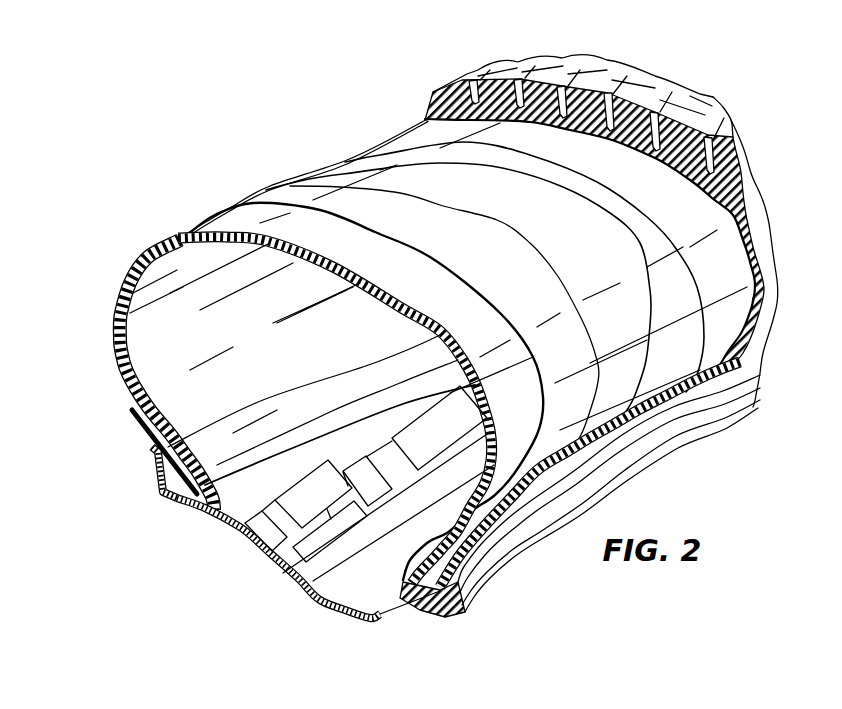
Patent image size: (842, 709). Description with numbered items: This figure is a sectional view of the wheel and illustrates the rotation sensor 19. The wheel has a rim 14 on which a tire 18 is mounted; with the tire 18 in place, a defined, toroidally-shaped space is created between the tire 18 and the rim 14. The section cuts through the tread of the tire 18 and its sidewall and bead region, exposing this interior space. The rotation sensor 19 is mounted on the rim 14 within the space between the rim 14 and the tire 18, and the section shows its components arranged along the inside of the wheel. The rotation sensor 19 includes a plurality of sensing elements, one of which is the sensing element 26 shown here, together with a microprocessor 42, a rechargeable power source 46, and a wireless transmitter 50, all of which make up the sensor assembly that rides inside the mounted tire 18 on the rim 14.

The rim 14 is at (364, 587).
The tire 18 is at (617, 95).
The rotation sensor 19 is at (103, 452).
The sensing element 26 is at (428, 450).
The microprocessor 42 is at (296, 497).
The rechargeable power source 46 is at (303, 556).
The wireless transmitter 50 is at (264, 520).